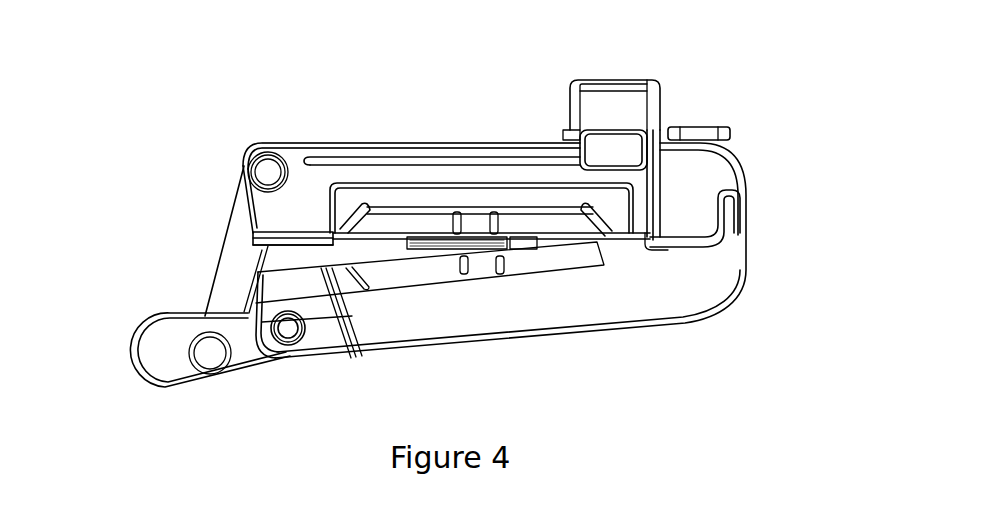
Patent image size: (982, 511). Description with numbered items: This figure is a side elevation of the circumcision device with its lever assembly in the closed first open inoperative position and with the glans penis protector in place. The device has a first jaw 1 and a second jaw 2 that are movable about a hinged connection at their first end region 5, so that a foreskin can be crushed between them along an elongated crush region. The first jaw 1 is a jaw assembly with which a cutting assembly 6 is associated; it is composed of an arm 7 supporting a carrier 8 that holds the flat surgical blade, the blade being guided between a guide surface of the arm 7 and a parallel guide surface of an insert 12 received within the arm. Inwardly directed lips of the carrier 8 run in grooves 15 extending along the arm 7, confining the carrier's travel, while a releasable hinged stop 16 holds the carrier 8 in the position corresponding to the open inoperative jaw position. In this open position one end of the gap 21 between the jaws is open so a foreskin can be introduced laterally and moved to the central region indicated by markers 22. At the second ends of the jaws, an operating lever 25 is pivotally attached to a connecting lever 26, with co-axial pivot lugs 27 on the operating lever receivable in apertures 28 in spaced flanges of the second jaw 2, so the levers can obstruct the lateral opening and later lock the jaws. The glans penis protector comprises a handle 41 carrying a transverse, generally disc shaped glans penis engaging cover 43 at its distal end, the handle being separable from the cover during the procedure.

The first jaw 1 is at (378, 123).
The second jaw 2 is at (605, 290).
The first end region 5 is at (727, 213).
The cutting assembly 6 is at (635, 65).
The arm 7 is at (406, 170).
The carrier 8 is at (617, 160).
The insert 12 is at (478, 193).
The grooves 15 is at (520, 160).
The releasable hinged stop 16 is at (697, 133).
The gap 21 is at (280, 257).
The markers 22 is at (492, 260).
The operating lever 25 is at (162, 358).
The connecting lever 26 is at (235, 283).
The pivot lugs 27 is at (284, 334).
The apertures 28 is at (291, 343).
The handle 41 is at (427, 252).
The glans penis engaging cover 43 is at (519, 246).